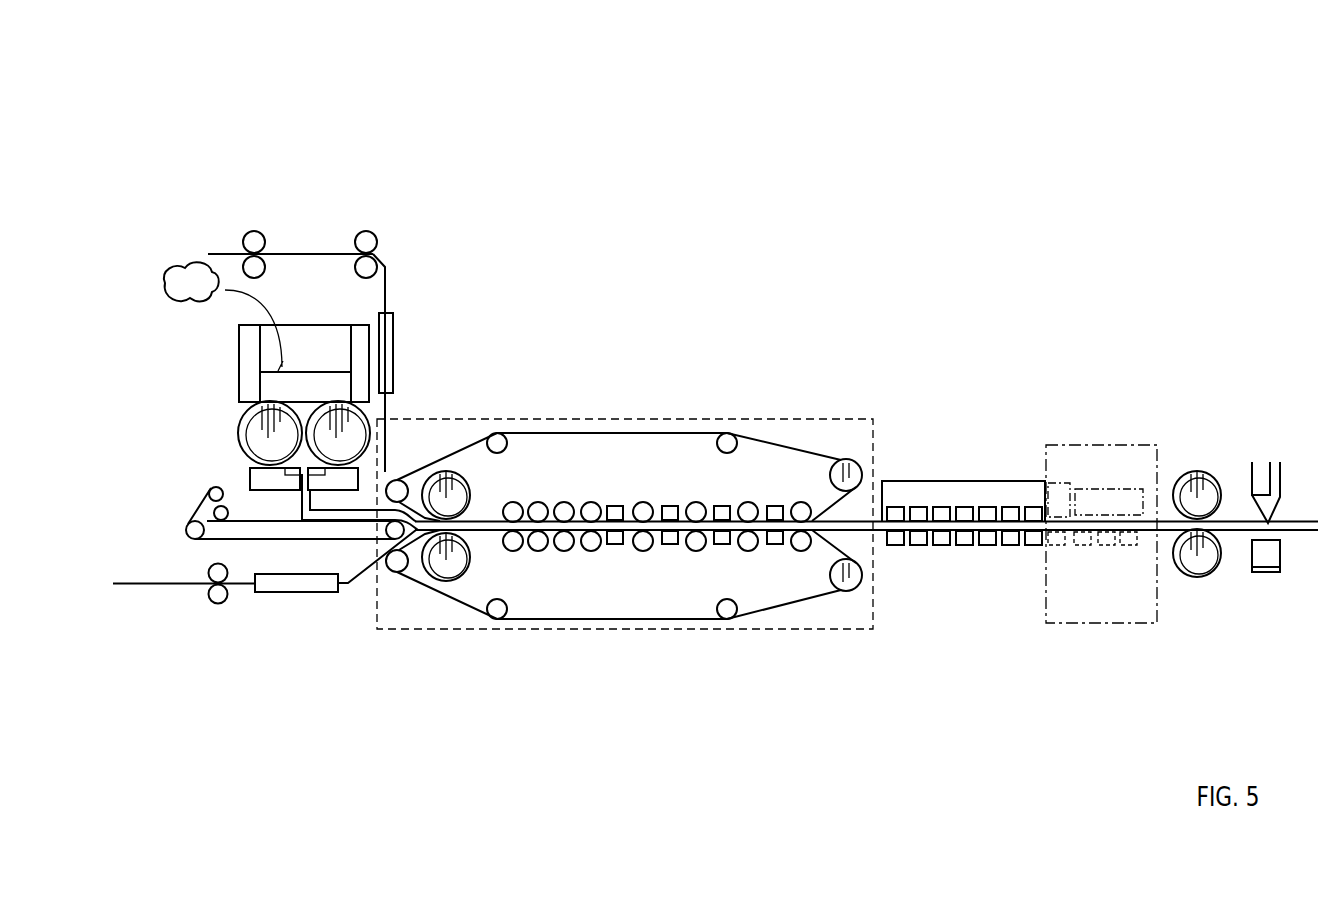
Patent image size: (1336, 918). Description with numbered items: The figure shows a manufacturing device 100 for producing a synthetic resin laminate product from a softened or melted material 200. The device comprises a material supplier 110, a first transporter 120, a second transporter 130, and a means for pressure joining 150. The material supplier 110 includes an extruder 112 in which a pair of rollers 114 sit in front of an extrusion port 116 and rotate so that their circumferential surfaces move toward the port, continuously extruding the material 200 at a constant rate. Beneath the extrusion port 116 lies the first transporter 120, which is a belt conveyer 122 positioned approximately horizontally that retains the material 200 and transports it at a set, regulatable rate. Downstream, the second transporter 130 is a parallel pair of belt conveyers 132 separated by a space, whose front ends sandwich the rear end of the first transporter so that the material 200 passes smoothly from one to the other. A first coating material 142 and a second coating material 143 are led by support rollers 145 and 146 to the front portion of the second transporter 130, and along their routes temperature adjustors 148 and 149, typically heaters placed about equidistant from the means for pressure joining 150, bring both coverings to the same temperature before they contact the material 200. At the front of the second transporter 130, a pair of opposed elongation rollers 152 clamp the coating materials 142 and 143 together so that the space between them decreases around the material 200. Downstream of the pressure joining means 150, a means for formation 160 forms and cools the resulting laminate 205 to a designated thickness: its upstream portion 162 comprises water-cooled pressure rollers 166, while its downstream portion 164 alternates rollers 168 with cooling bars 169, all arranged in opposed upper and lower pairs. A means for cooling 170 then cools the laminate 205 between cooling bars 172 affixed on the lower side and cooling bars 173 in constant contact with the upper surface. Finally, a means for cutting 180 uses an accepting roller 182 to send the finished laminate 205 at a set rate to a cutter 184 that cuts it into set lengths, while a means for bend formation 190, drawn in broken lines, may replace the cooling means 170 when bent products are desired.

The manufacturing device 100 is at (866, 317).
The material supplier 110 is at (242, 376).
The extruder 112 is at (275, 366).
The rollers 114 is at (304, 371).
The extrusion port 116 is at (257, 467).
The first transporter 120 is at (256, 518).
The belt conveyer 122 is at (184, 583).
The second transporter 130 is at (625, 501).
The belt conveyers 132 is at (624, 522).
The first coating material 142 is at (414, 358).
The second coating material 143 is at (377, 591).
The support rollers 145 is at (292, 212).
The support rollers 146 is at (231, 620).
The temperature adjustor 148 is at (417, 338).
The temperature adjustor 149 is at (296, 613).
The means for pressure joining 150 is at (444, 610).
The elongation rollers 152 is at (464, 569).
The means for formation 160 is at (654, 518).
The upstream portion 162 is at (538, 555).
The downstream portion 164 is at (696, 555).
The pressure rollers 166 is at (538, 584).
The rollers 168 is at (696, 584).
The cooling bars 169 is at (695, 586).
The means for cooling 170 is at (963, 483).
The cooling bars 172 is at (964, 572).
The cooling bars 173 is at (964, 474).
The means for cutting 180 is at (1231, 501).
The accepting roller 182 is at (1197, 445).
The cutter 184 is at (1273, 472).
The means for bend formation 190 is at (1101, 580).
The material 200 is at (387, 450).
The laminate 205 is at (1195, 613).